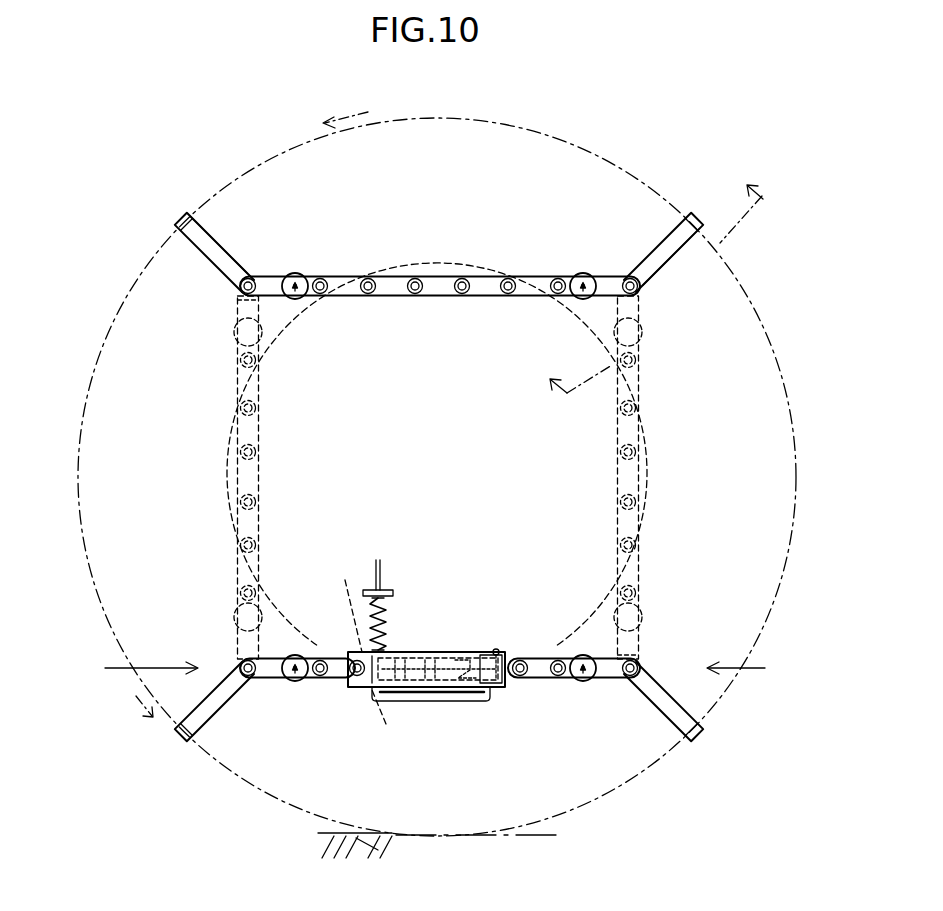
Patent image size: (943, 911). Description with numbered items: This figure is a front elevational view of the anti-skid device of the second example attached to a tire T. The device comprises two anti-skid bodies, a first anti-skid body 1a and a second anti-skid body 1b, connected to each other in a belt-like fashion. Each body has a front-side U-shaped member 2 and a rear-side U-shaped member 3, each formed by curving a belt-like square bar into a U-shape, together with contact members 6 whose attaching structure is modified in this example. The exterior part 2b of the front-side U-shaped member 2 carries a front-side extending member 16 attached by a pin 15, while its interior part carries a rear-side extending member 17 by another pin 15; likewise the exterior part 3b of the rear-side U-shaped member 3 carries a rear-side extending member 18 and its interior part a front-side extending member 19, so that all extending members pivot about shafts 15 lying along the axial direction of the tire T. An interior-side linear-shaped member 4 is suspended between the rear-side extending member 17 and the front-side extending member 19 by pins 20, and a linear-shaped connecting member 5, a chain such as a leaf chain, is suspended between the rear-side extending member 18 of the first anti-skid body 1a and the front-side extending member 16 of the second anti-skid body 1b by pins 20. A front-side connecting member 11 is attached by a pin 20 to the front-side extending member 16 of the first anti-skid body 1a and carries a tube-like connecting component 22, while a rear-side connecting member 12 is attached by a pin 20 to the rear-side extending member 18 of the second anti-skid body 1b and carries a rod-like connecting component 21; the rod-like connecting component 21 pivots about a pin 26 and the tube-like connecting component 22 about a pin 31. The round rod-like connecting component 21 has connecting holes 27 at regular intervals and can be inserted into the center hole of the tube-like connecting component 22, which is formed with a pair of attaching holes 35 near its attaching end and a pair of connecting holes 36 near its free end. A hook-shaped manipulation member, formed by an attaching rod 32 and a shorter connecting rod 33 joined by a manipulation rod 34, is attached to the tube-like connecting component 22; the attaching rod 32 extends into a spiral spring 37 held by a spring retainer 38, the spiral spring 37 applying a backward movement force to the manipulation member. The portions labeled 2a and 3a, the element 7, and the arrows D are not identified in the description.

The first anti-skid body 1a is at (129, 667).
The second anti-skid body 1b is at (757, 667).
The front-side U-shaped member 2 is at (717, 253).
The first arm tip 2a is at (692, 210).
The exterior part 2b is at (653, 249).
The rear-side U-shaped member 3 is at (185, 230).
The second arm tip 3a is at (189, 212).
The exterior part 3b is at (215, 236).
The interior-side linear-shaped member 4 is at (256, 467).
The linear-shaped connecting member 5 is at (438, 297).
The contact member 6 is at (299, 299).
The axle 7 is at (297, 287).
The front-side connecting member 11 is at (338, 657).
The rear-side connecting member 12 is at (528, 657).
The pin 15 is at (250, 276).
The front-side extending member 16 is at (607, 278).
The rear-side extending member 17 is at (643, 354).
The rear-side extending member 18 is at (258, 294).
The front-side extending member 19 is at (237, 313).
The pin 20 is at (328, 297).
The rod-like connecting component 21 is at (437, 688).
The tube-like connecting component 22 is at (437, 651).
The pin 26 is at (520, 679).
The connecting hole 27 is at (470, 652).
The pin 31 is at (358, 688).
The attaching rod 32 is at (375, 561).
The connecting rod 33 is at (487, 651).
The manipulation rod 34 is at (467, 702).
The attaching hole 35 is at (365, 652).
The connecting hole 36 is at (498, 650).
The spiral spring 37 is at (385, 613).
The spring retainer 38 is at (385, 596).
The direction D is at (662, 299).
The tire T is at (150, 263).